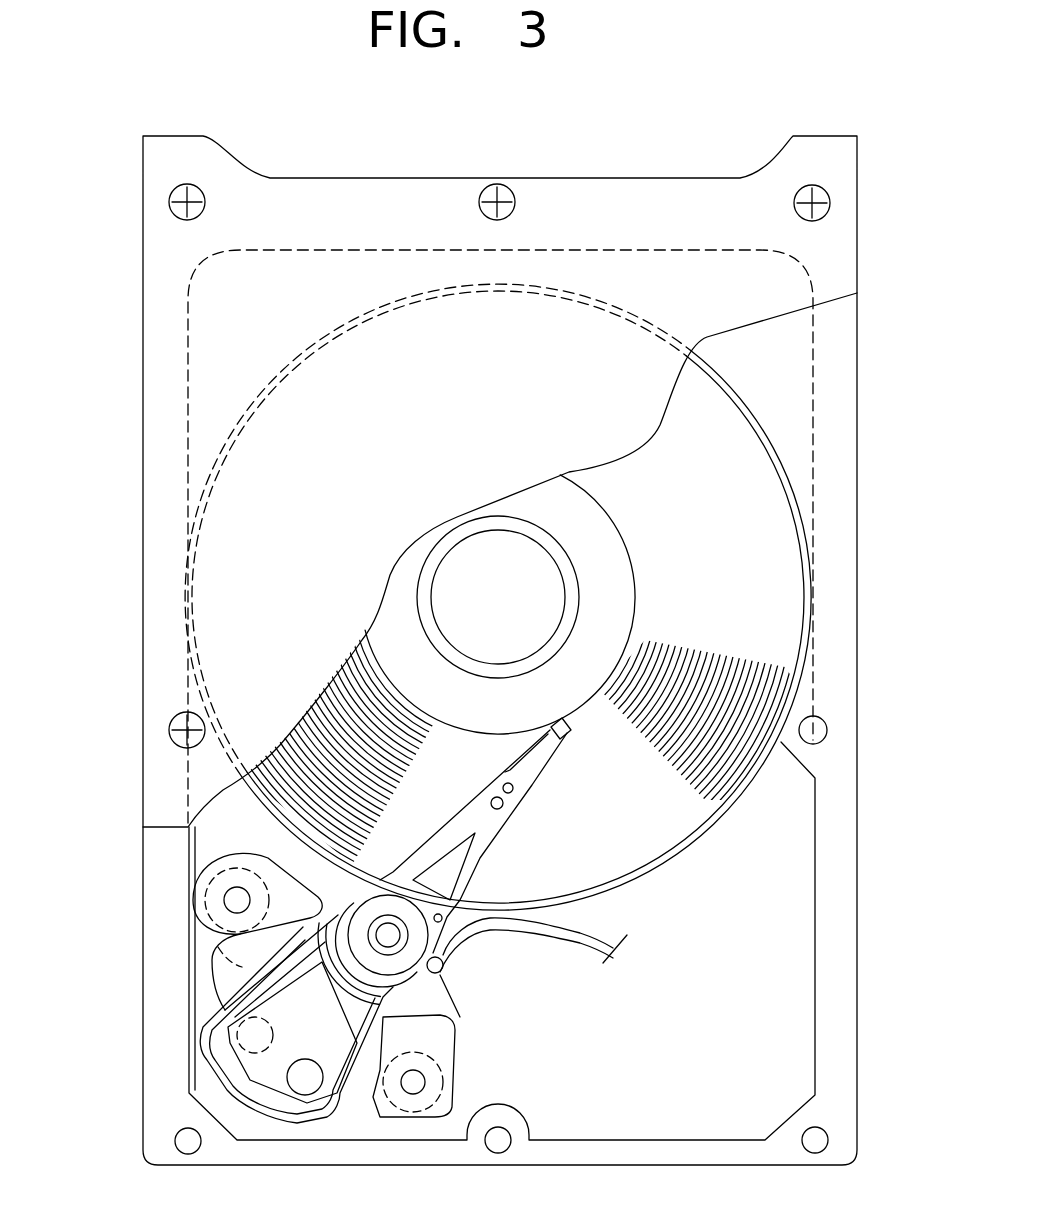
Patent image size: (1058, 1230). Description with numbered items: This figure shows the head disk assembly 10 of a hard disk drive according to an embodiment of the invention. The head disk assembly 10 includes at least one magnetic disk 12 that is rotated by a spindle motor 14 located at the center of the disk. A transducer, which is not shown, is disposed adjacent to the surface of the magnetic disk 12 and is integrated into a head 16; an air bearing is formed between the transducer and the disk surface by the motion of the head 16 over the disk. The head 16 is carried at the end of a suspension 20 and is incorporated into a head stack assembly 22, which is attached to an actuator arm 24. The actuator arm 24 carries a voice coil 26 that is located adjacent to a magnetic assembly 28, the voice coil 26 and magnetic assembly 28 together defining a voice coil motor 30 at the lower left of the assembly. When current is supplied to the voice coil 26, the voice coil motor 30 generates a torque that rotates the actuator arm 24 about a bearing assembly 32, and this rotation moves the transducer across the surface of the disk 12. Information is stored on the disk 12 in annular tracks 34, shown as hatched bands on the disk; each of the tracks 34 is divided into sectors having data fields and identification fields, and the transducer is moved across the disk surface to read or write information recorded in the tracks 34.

The head disk assembly 10 is at (645, 92).
The magnetic disk 12 is at (762, 530).
The spindle motor 14 is at (472, 573).
The head 16 is at (568, 729).
The suspension 20 is at (547, 747).
The head stack assembly 22 is at (503, 842).
The actuator arm 24 is at (297, 950).
The voice coil 26 is at (217, 1026).
The magnetic assembly 28 is at (237, 968).
The voice coil motor 30 is at (358, 1097).
The bearing assembly 32 is at (405, 947).
The annular tracks 34 is at (320, 750).